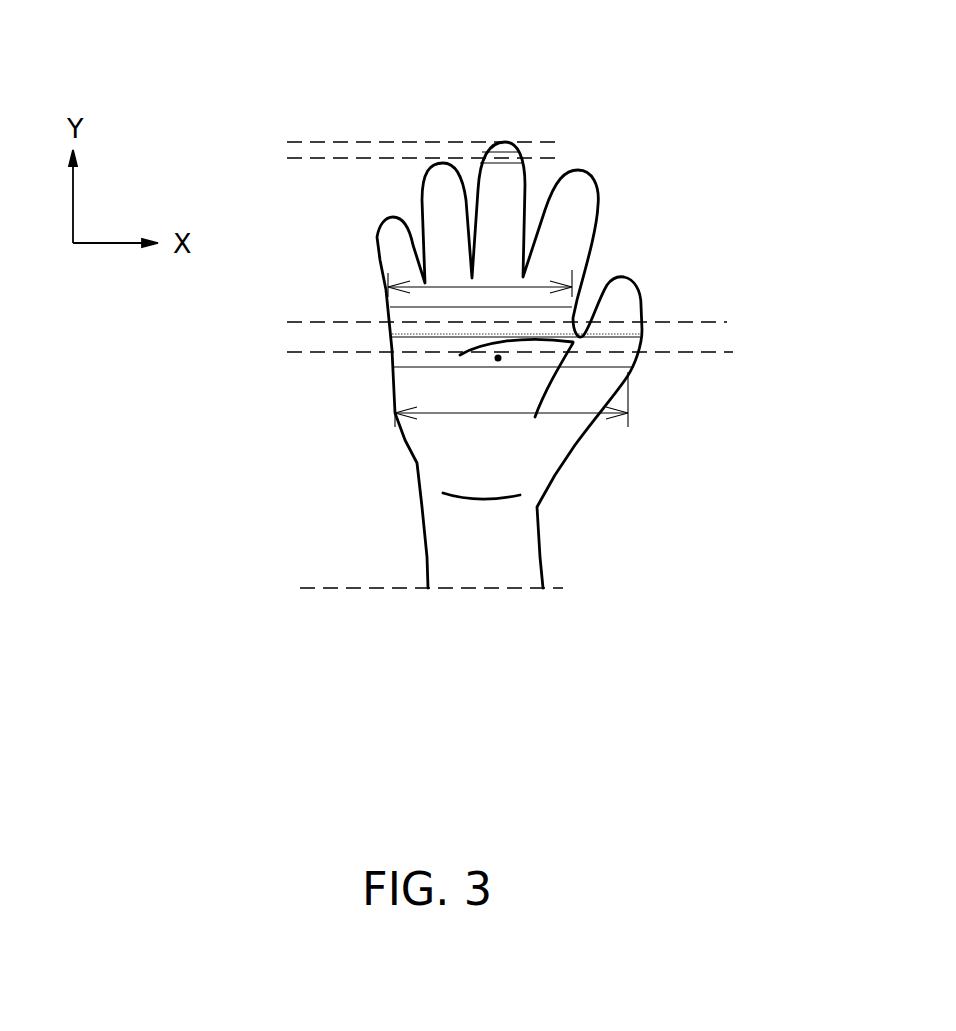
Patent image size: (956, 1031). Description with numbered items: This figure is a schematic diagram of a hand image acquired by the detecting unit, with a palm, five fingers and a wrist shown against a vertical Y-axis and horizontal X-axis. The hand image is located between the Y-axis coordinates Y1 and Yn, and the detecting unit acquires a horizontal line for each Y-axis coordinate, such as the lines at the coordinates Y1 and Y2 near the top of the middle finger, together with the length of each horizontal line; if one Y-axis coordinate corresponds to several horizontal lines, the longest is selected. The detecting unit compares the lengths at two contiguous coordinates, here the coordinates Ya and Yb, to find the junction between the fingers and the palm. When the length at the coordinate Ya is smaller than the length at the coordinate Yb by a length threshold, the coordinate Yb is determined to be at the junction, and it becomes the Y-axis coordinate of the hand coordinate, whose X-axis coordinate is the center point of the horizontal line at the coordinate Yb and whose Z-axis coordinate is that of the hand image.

The Y-axis coordinate Y1 is at (406, 133).
The Y-axis coordinate Y2 is at (406, 162).
The Y-axis coordinate Ya is at (489, 320).
The Y-axis coordinate Yb is at (492, 350).
The Y-axis coordinate Yn is at (410, 582).